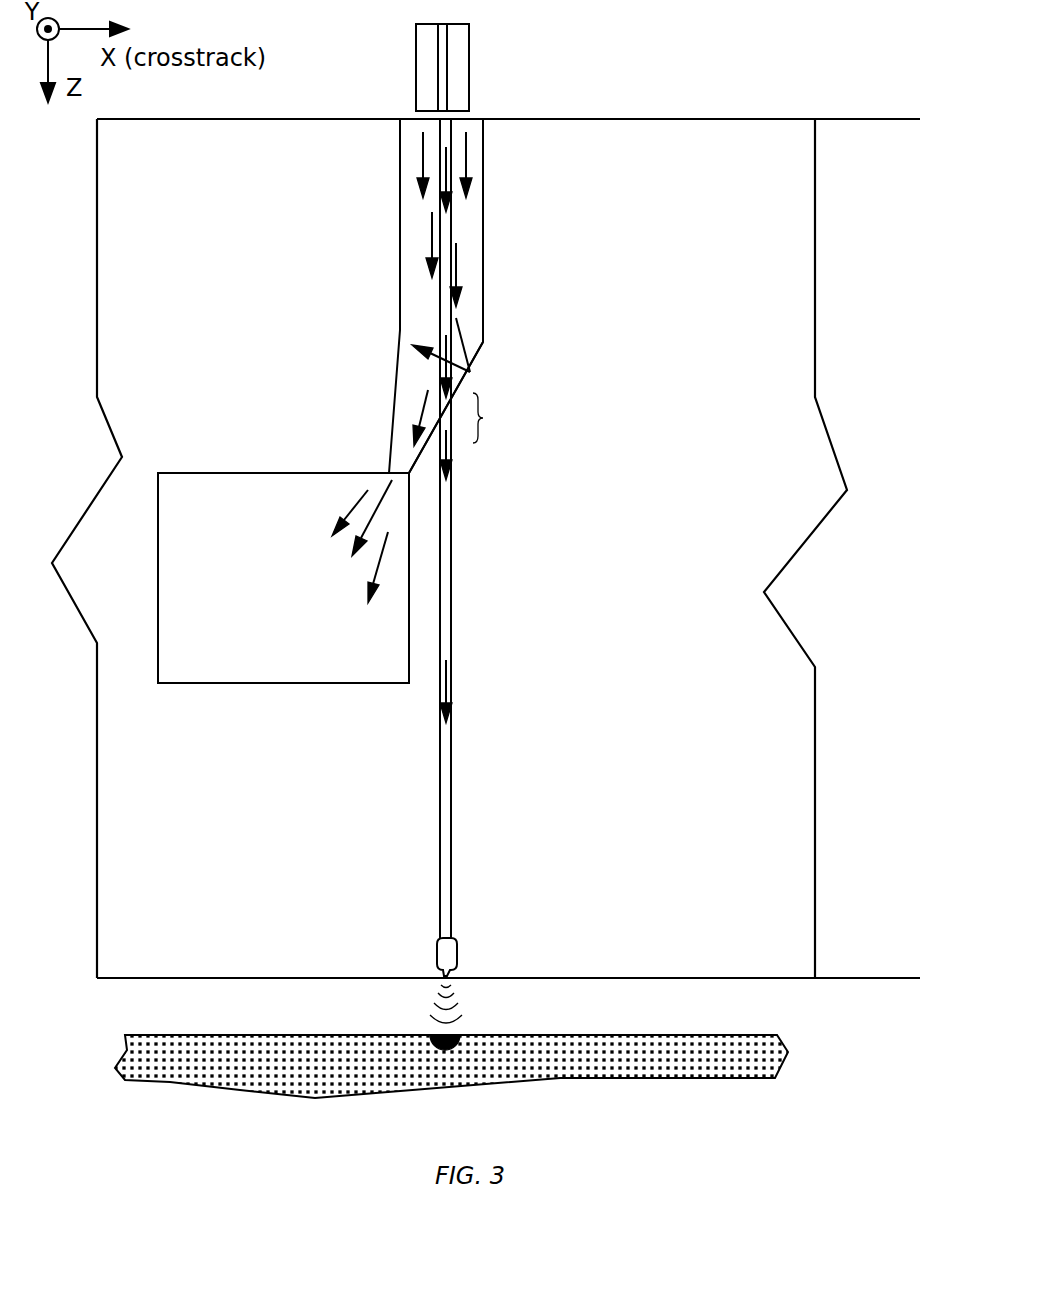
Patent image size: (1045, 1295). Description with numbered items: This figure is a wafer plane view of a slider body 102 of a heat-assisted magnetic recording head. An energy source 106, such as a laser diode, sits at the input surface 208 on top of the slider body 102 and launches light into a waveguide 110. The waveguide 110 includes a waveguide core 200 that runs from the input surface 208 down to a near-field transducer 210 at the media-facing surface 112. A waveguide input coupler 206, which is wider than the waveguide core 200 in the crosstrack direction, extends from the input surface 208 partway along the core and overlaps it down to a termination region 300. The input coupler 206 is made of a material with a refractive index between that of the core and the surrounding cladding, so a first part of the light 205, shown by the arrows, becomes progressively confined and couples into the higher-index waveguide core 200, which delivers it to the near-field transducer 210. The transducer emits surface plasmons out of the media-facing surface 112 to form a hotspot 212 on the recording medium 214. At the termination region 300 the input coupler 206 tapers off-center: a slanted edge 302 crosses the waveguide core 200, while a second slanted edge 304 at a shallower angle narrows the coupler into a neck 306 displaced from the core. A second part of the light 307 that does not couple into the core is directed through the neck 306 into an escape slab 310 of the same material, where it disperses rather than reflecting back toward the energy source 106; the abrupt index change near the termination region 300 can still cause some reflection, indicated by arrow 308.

The slider body 102 is at (688, 118).
The energy source 106 is at (469, 80).
The waveguide 110 is at (279, 306).
The media-facing surface 112 is at (865, 985).
The waveguide core 200 is at (438, 765).
The first part of the light 205 is at (452, 447).
The input coupler 206 is at (482, 233).
The input surface 208 is at (850, 118).
The near-field transducer 210 is at (437, 945).
The hotspot 212 is at (445, 1042).
The recording medium 214 is at (720, 1045).
The termination region 300 is at (485, 418).
The slanted edge 302 is at (476, 358).
The second slanted edge 304 is at (396, 392).
The neck 306 is at (393, 458).
The second part of the light 307 is at (412, 415).
The reflection arrow 308 is at (474, 393).
The escape slab 310 is at (258, 688).